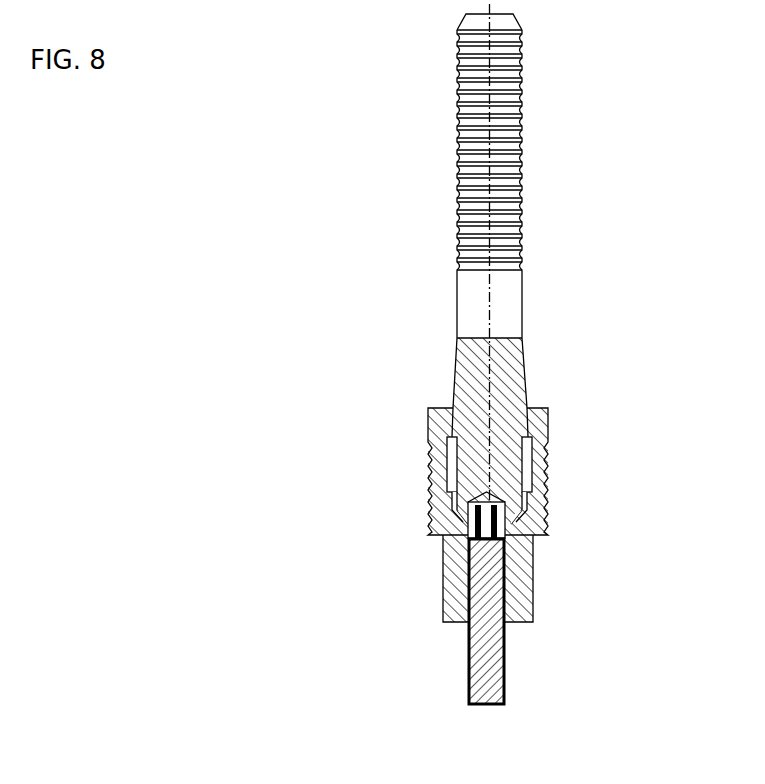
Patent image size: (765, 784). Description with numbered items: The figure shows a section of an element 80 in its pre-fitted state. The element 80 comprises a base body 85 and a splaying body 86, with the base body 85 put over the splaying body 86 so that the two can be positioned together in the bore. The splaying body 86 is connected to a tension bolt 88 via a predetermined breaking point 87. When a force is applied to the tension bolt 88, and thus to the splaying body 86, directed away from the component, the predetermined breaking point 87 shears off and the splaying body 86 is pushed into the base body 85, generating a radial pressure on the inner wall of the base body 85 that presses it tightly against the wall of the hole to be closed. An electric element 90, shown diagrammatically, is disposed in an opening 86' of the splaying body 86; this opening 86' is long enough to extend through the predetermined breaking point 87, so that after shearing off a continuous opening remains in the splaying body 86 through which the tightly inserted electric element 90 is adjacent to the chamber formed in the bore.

The element 80 is at (572, 459).
The base body 85 is at (438, 468).
The splaying body 86 is at (396, 589).
The opening 86' is at (378, 483).
The predetermined breaking point 87 is at (513, 523).
The tension bolt 88 is at (530, 222).
The electric element 90 is at (505, 625).